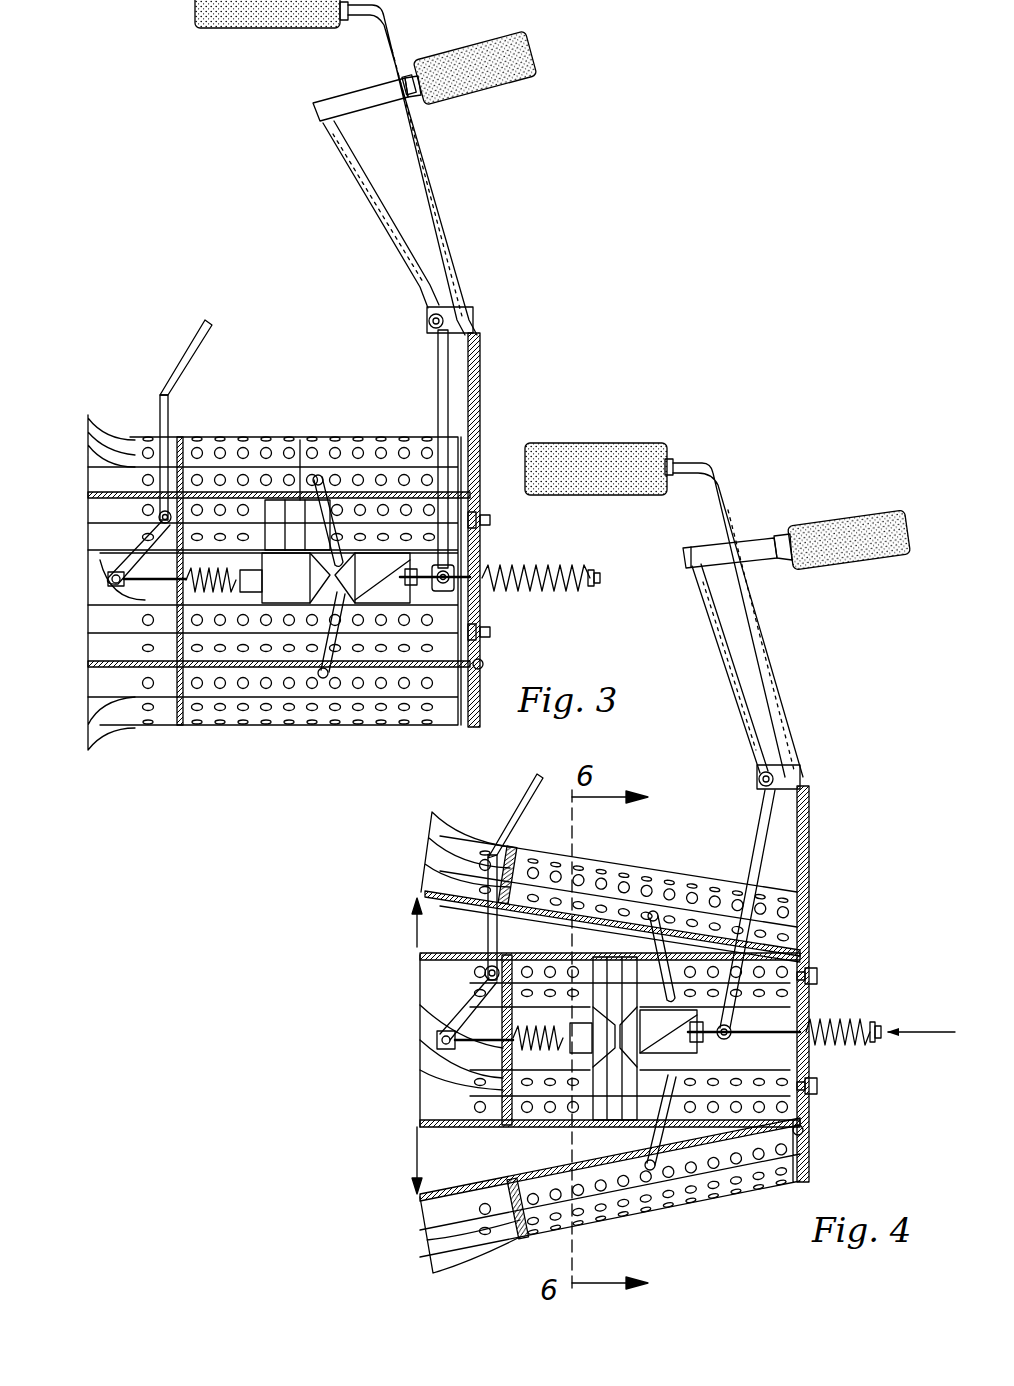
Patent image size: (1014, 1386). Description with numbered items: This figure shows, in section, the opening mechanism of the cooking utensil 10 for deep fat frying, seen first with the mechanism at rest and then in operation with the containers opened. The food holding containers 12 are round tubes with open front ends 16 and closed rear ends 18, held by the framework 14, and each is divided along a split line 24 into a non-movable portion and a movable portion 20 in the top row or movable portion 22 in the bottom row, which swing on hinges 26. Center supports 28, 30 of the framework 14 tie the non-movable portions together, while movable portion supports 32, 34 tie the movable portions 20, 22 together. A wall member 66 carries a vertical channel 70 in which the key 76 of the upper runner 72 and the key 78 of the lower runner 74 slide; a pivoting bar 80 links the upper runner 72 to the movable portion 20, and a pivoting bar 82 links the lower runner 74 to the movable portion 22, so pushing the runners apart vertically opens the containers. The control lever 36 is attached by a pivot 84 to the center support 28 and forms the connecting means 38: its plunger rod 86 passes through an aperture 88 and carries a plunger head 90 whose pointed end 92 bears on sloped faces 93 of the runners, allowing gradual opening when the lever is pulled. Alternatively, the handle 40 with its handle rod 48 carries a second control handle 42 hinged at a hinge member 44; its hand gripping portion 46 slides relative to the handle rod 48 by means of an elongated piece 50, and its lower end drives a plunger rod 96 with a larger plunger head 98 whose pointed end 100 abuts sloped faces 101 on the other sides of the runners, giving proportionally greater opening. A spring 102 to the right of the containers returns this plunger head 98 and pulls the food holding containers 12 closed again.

In FIG. 3, the cooking utensil 10 is at (465, 205).
In FIG. 4, the cooking utensil 10 is at (790, 663).
In FIG. 3, the food holding containers 12 is at (100, 410).
In FIG. 4, the food holding containers 12 is at (430, 831).
In FIG. 3, the framework 14 is at (100, 471).
In FIG. 4, the framework 14 is at (786, 930).
In FIG. 3, the open front ends 16 is at (72, 497).
In FIG. 4, the open front ends 16 is at (428, 862).
In FIG. 3, the closed rear ends 18 is at (474, 522).
In FIG. 4, the closed rear ends 18 is at (762, 1180).
In FIG. 3, the movable portions 20 is at (110, 438).
In FIG. 4, the movable portions 20 is at (437, 1265).
In FIG. 3, the movable portions 22 is at (100, 596).
In FIG. 4, the movable portions 22 is at (420, 963).
In FIG. 3, the split lines 24 is at (447, 492).
In FIG. 4, the split lines 24 is at (803, 984).
In FIG. 3, the hinges 26 is at (484, 664).
In FIG. 4, the hinges 26 is at (806, 1130).
In FIG. 3, the center support 28 is at (112, 640).
In FIG. 4, the center support 28 is at (472, 1092).
In FIG. 3, the center support 30 is at (482, 636).
In FIG. 4, the center support 30 is at (802, 954).
In FIG. 3, the movable portion support 32 is at (180, 440).
In FIG. 4, the movable portion support 32 is at (517, 848).
In FIG. 3, the movable portion support 34 is at (451, 432).
In FIG. 4, the movable portion support 34 is at (792, 894).
In FIG. 3, the control lever 36 is at (213, 336).
In FIG. 4, the control lever 36 is at (543, 782).
In FIG. 3, the connecting means 38 is at (102, 610).
In FIG. 4, the connecting means 38 is at (462, 1042).
In FIG. 3, the handle 40 is at (436, 171).
In FIG. 4, the handle 40 is at (762, 627).
In FIG. 3, the second control handle 42 is at (380, 232).
In FIG. 4, the second control handle 42 is at (730, 676).
In FIG. 3, the hinge member 44 is at (472, 314).
In FIG. 4, the hinge member 44 is at (802, 776).
In FIG. 3, the hand gripping portion 46 is at (492, 88).
In FIG. 4, the hand gripping portion 46 is at (850, 572).
In FIG. 3, the handle rod 48 is at (404, 252).
In FIG. 4, the handle rod 48 is at (745, 700).
In FIG. 3, the elongated piece 50 is at (348, 112).
In FIG. 4, the elongated piece 50 is at (708, 582).
In FIG. 3, the wall member 66 is at (306, 500).
In FIG. 4, the wall member 66 is at (615, 960).
In FIG. 3, the channel 70 is at (297, 470).
In FIG. 4, the channel 70 is at (626, 1000).
In FIG. 3, the upper runner 72 is at (268, 500).
In FIG. 4, the upper runner 72 is at (595, 962).
In FIG. 3, the lower runner 74 is at (300, 606).
In FIG. 4, the lower runner 74 is at (602, 1062).
In FIG. 3, the key 76 is at (329, 472).
In FIG. 4, the key 76 is at (669, 950).
In FIG. 3, the key 78 is at (322, 682).
In FIG. 4, the key 78 is at (660, 1112).
In FIG. 3, the pivoting bar 80 is at (335, 462).
In FIG. 4, the pivoting bar 80 is at (660, 910).
In FIG. 3, the pivoting bar 82 is at (342, 690).
In FIG. 4, the pivoting bar 82 is at (690, 1172).
In FIG. 3, the pivot 84 is at (158, 518).
In FIG. 4, the pivot 84 is at (490, 964).
In FIG. 3, the plunger rod 86 is at (130, 562).
In FIG. 4, the plunger rod 86 is at (460, 1016).
In FIG. 3, the aperture 88 is at (108, 578).
In FIG. 4, the aperture 88 is at (437, 1035).
In FIG. 3, the plunger head 90 is at (196, 600).
In FIG. 4, the plunger head 90 is at (518, 1025).
In FIG. 3, the pointed end 92 is at (250, 602).
In FIG. 4, the pointed end 92 is at (572, 1052).
In FIG. 3, the sloped faces 93 is at (226, 600).
In FIG. 4, the sloped faces 93 is at (546, 1052).
In FIG. 3, the plunger rod 96 is at (546, 565).
In FIG. 4, the plunger rod 96 is at (834, 1020).
In FIG. 3, the plunger head 98 is at (458, 590).
In FIG. 4, the plunger head 98 is at (782, 1048).
In FIG. 3, the pointed end 100 is at (400, 702).
In FIG. 4, the pointed end 100 is at (725, 1182).
In FIG. 3, the sloped faces 101 is at (416, 707).
In FIG. 4, the sloped faces 101 is at (746, 1187).
In FIG. 3, the spring 102 is at (588, 586).
In FIG. 4, the spring 102 is at (862, 1044).